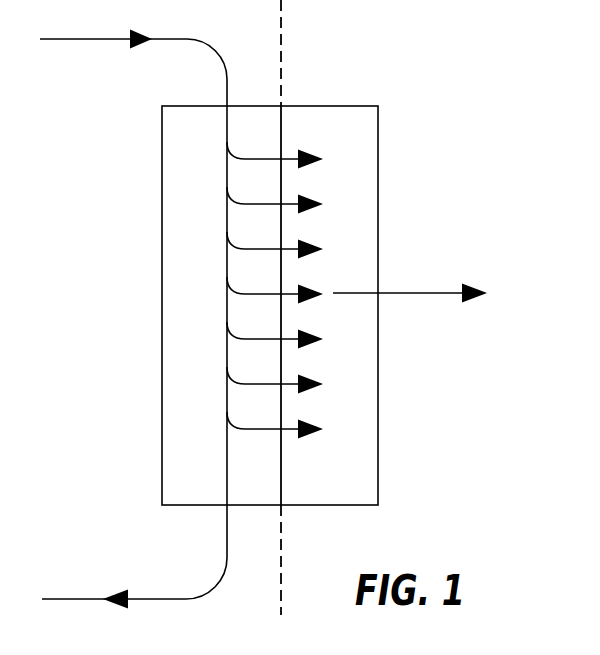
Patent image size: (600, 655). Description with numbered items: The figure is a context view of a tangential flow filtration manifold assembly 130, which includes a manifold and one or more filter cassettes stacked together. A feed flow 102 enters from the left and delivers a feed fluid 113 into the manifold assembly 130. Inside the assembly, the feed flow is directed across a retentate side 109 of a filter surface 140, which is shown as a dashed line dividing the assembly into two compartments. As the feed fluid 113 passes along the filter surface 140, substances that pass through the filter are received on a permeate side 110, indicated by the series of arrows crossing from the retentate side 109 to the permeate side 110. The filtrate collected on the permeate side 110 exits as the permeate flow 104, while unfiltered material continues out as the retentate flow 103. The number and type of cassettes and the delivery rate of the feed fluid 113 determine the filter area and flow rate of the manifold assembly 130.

The feed flow 102 is at (180, 38).
The retentate flow 103 is at (93, 600).
The permeate flow 104 is at (425, 295).
The retentate side 109 is at (190, 406).
The permeate side 110 is at (295, 290).
The feed fluid 113 is at (190, 234).
The manifold assembly 130 is at (332, 106).
The filter surface 140 is at (282, 474).